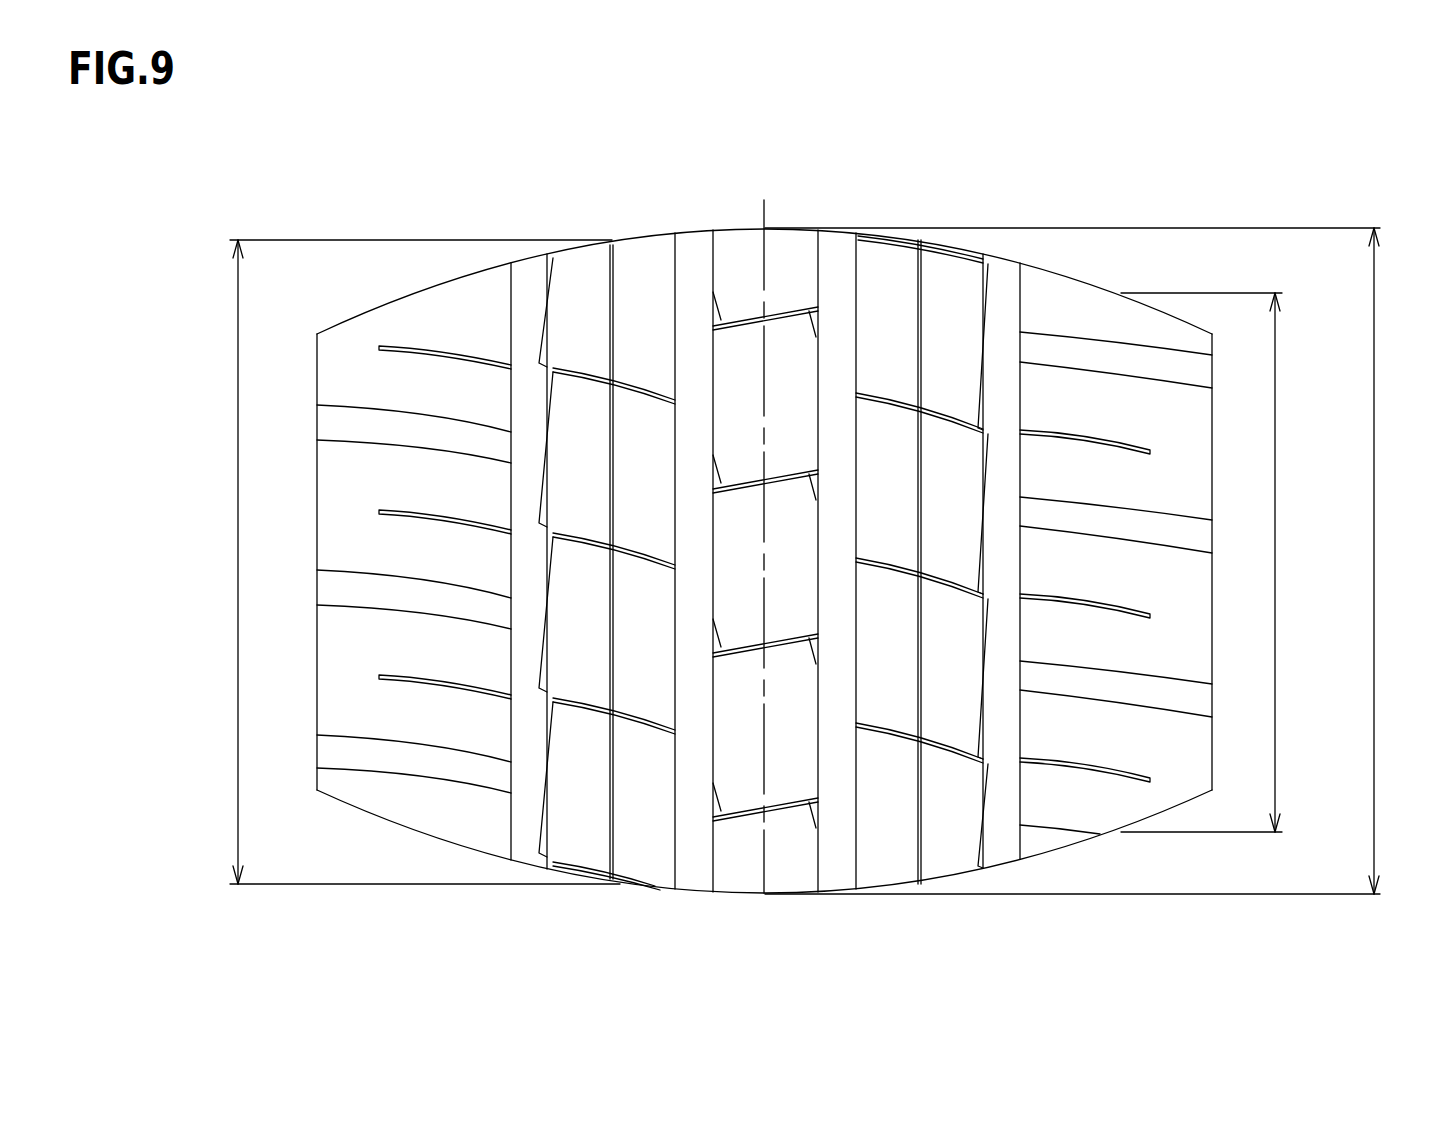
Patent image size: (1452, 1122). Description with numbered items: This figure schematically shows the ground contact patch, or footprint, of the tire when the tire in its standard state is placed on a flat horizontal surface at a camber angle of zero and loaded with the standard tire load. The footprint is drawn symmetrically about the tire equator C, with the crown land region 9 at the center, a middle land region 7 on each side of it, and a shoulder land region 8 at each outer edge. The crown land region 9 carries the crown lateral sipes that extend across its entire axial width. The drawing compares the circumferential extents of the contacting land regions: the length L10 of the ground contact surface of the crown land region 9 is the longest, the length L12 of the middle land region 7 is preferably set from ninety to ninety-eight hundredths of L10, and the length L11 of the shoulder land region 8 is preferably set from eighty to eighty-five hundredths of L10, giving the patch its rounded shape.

The middle land region 7 is at (645, 283).
The shoulder land region 8 is at (414, 319).
The crown land region 9 is at (744, 255).
The tire equator C is at (767, 529).
The length in the tire circumferential direction of the ground contact surface of th L10 is at (1099, 561).
The length in the tire circumferential direction of the ground contact surface of th L11 is at (1228, 562).
The length in the tire circumferential direction of the ground contact surface of th L12 is at (400, 562).